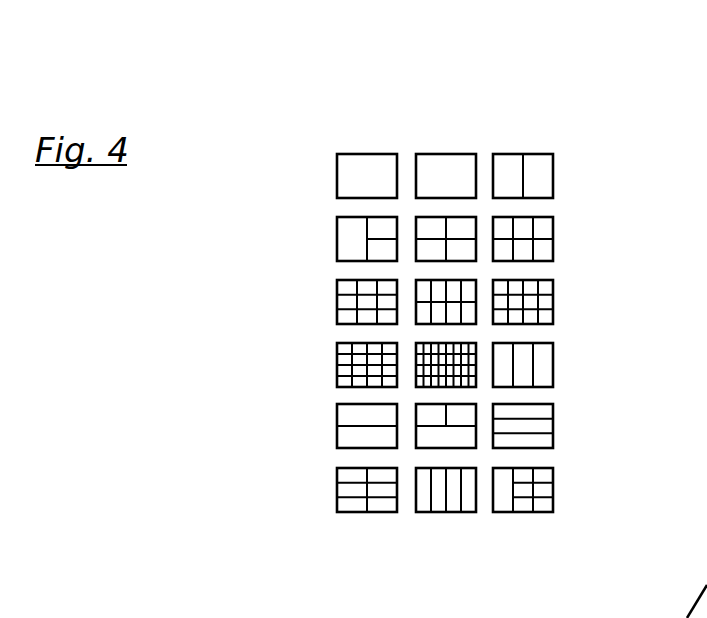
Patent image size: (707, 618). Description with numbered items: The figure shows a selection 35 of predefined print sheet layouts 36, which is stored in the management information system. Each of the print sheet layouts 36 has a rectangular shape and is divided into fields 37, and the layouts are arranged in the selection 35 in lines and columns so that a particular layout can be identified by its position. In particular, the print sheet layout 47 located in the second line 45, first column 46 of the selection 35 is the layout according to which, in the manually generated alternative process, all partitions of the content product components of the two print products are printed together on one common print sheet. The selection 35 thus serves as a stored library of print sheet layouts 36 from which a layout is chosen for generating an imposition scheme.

The selection 35 is at (632, 163).
The print sheet layouts 36 is at (440, 168).
The fields 37 is at (367, 572).
The second line 45 is at (578, 240).
The first column 46 is at (362, 140).
The print sheet layout 47 is at (350, 235).